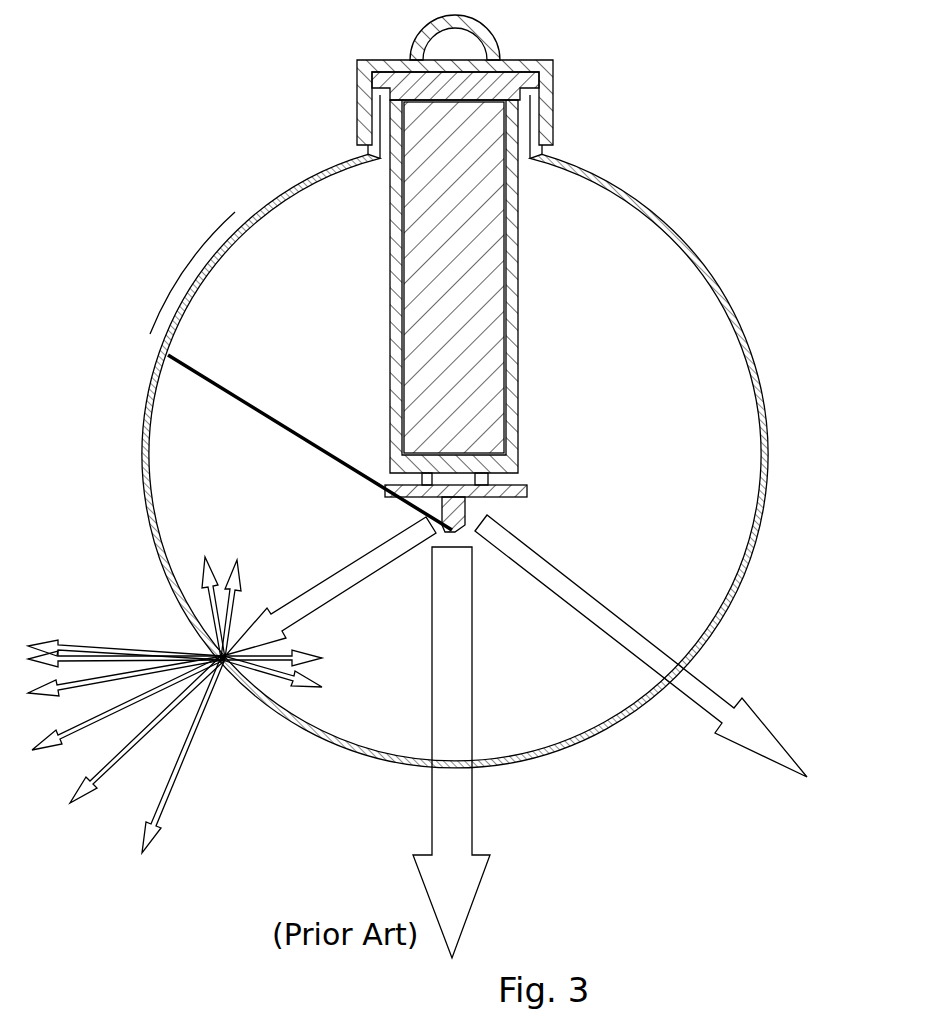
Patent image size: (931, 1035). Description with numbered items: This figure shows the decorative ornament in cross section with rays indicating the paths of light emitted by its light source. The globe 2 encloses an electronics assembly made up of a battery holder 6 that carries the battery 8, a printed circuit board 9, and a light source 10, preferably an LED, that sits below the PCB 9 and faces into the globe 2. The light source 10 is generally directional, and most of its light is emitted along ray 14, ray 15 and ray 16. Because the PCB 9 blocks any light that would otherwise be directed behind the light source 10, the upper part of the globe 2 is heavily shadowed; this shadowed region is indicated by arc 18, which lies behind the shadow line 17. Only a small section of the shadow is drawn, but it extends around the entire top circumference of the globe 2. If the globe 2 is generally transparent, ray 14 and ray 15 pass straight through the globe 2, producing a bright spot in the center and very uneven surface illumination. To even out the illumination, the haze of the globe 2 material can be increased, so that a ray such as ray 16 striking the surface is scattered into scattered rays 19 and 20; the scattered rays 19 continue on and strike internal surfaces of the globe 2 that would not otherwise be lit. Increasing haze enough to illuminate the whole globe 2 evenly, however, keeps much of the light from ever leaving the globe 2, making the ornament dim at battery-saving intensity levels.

The globe 2 is at (657, 212).
The battery holder 6 is at (520, 303).
The battery 8 is at (480, 388).
The printed circuit board (PCB) 9 is at (527, 489).
The light source 10 is at (467, 506).
The ray 14 is at (460, 892).
The ray 15 is at (740, 722).
The ray 16 is at (345, 580).
The shadow line 17 is at (272, 423).
The arc 18 is at (200, 238).
The scattered rays 19 is at (207, 597).
The scattered rays 20 is at (158, 725).